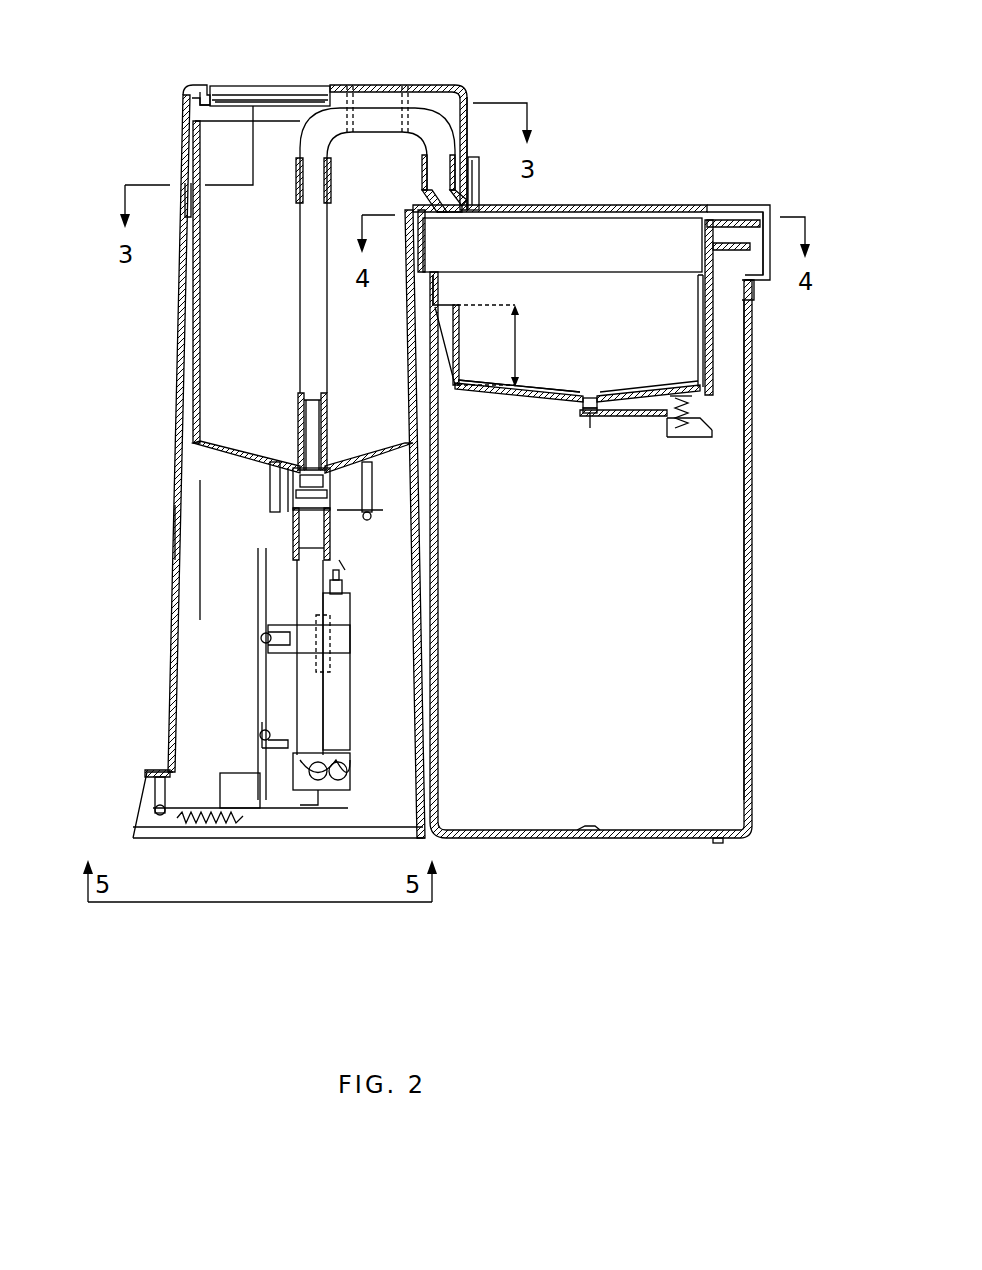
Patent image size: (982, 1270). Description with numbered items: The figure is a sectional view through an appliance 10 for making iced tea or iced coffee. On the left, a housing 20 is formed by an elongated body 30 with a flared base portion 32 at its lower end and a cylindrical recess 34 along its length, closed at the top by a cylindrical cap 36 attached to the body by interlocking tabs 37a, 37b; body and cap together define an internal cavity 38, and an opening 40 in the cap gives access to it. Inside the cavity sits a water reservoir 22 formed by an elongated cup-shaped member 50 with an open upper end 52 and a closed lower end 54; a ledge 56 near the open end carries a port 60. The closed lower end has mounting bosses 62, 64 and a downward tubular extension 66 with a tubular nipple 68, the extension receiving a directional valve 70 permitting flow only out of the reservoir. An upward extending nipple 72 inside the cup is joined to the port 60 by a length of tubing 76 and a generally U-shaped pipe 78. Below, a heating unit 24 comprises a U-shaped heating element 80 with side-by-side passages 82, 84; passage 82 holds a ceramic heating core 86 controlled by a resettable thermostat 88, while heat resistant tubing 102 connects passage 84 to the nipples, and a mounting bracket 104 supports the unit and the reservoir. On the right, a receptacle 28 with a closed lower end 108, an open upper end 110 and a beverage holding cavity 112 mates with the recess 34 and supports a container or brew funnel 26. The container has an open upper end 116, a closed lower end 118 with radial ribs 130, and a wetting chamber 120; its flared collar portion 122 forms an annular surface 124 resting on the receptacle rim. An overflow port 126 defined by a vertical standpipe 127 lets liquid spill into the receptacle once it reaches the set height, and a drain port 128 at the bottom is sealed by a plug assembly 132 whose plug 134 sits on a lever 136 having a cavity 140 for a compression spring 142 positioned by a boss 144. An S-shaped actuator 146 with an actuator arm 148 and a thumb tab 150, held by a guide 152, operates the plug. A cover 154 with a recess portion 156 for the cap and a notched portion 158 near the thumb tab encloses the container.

The appliance 10 is at (536, 70).
The housing 20 is at (172, 504).
The water reservoir 22 is at (262, 314).
The heating unit 24 is at (253, 688).
The container or brew funnel 26 is at (563, 289).
The receptacle 28 is at (626, 580).
The elongated body 30 is at (175, 412).
The flared base portion 32 is at (150, 800).
The cylindrical recess 34 is at (425, 838).
The cylindrical cap 36 is at (182, 110).
The interlocking tab 37a is at (188, 185).
The interlocking tab 37b is at (190, 192).
The internal cavity 38 is at (205, 555).
The opening 40 is at (240, 107).
The cup-shaped member 50 is at (203, 390).
The open upper end 52 is at (283, 108).
The closed lower end 54 is at (265, 458).
The ledge 56 is at (420, 193).
The port 60 is at (438, 172).
The mounting boss 62 is at (273, 493).
The mounting boss 64 is at (330, 495).
The tubular extension 66 is at (330, 522).
The tubular nipple 68 is at (303, 523).
The directional valve 70 is at (310, 485).
The upward extending nipple 72 is at (320, 430).
The tubing 76 is at (313, 260).
The U-shaped pipe 78 is at (388, 108).
The heating element 80 is at (325, 700).
The passage 82 is at (338, 773).
The passage 84 is at (338, 790).
The ceramic heating core 86 is at (343, 588).
The resettable thermostat 88 is at (285, 780).
The heat resistant tubing 102 is at (297, 570).
The mounting bracket 104 is at (257, 685).
The closed lower end 108 is at (668, 838).
The open upper end 110 is at (744, 340).
The beverage holding cavity 112 is at (597, 701).
The open upper end 116 is at (620, 222).
The closed lower end 118 is at (470, 392).
The wetting chamber 120 is at (593, 327).
The flared collar portion 122 is at (517, 230).
The annular surface 124 is at (752, 295).
The overflow port 126 is at (455, 305).
The vertical standpipe 127 is at (457, 322).
The drain port 128 is at (588, 398).
The radial ribs 130 is at (567, 357).
The plug assembly 132 is at (611, 433).
The plug 134 is at (588, 425).
The lever 136 is at (633, 420).
The cavity 140 is at (710, 440).
The compression spring 142 is at (690, 412).
The boss 144 is at (705, 415).
The actuator 146 is at (712, 437).
The actuator arm 148 is at (683, 437).
The thumb tab 150 is at (712, 247).
The guide 152 is at (715, 372).
The cover 154 is at (665, 205).
The recess portion 156 is at (476, 160).
The notched portion 158 is at (770, 210).